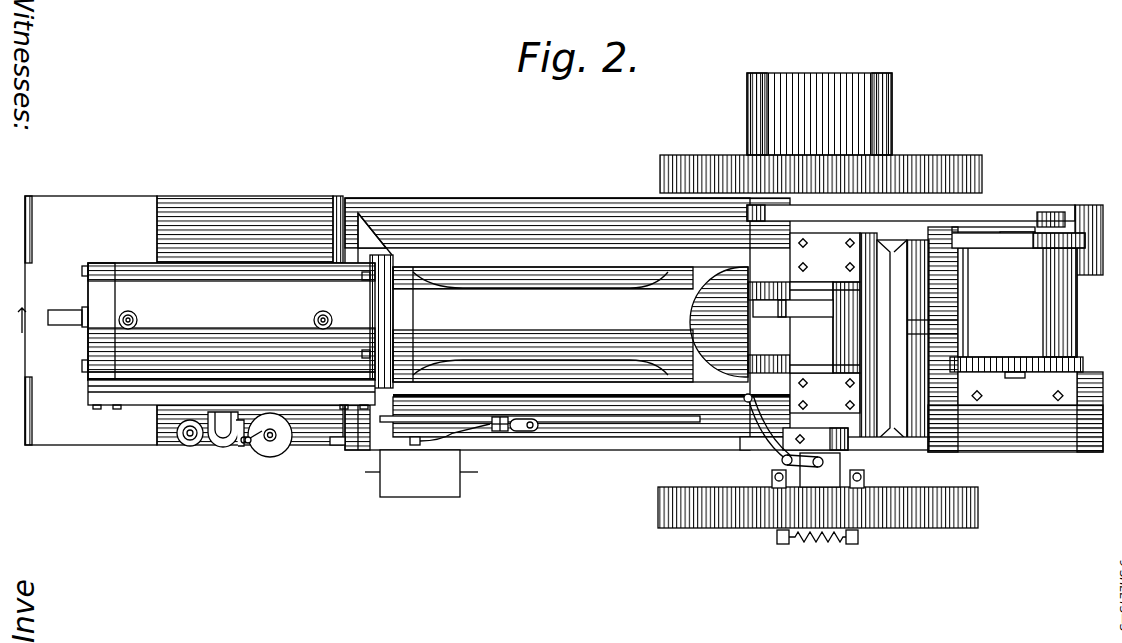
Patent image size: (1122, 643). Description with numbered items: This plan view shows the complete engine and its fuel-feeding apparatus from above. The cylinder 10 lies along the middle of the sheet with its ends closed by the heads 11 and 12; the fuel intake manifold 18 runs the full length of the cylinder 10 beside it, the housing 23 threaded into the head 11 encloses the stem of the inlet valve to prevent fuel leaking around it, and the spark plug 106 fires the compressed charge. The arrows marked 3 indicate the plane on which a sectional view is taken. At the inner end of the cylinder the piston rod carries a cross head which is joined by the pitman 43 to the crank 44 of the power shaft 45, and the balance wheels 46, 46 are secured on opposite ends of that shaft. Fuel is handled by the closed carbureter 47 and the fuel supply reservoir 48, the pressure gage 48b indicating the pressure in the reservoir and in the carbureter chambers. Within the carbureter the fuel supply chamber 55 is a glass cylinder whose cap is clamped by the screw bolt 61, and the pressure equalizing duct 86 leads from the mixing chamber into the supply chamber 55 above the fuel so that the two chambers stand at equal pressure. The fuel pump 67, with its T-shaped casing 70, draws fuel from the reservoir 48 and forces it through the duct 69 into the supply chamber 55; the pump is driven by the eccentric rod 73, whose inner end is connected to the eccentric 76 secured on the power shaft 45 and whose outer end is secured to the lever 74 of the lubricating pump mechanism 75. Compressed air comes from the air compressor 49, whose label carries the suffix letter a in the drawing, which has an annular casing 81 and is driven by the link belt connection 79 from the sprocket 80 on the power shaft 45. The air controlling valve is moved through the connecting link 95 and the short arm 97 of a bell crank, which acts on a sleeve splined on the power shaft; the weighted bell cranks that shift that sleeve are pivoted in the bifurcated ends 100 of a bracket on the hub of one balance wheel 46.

The section line 3 is at (1020, 327).
The cylinder 10 is at (231, 321).
The cylinder head 11 is at (112, 303).
The cylinder head 12 is at (347, 301).
The fuel intake manifold 18 is at (133, 407).
The housing 23 is at (70, 327).
The pitman 43 is at (692, 323).
The crank 44 is at (818, 305).
The power shaft 45 is at (800, 203).
The balance wheels 46 is at (962, 160).
The closed carbureter 47 is at (213, 448).
The fuel supply reservoir 48 is at (62, 430).
The pressure gage 48b is at (175, 432).
The air compressor 49 is at (1077, 305).
The fuel supply chamber 55 is at (272, 441).
The screw bolt 61 is at (255, 443).
The fuel pump 67 is at (527, 432).
The fuel duct 69 is at (336, 445).
The T-shaped casing 70 is at (512, 433).
The eccentric rod 73 is at (613, 437).
The lever 74 is at (415, 445).
The lubricating pump mechanism 75 is at (440, 483).
The eccentric 76 is at (850, 445).
The link belt connection 79 is at (990, 217).
The sprocket 80 is at (814, 205).
The annular casing 81 is at (1077, 343).
The pressure equalizing duct 86 is at (236, 446).
The connecting link 95 is at (652, 405).
The short arm 97 is at (807, 470).
The bifurcated ends 100 is at (775, 477).
The spark plug 106 is at (137, 317).
The wall a is at (1096, 246).